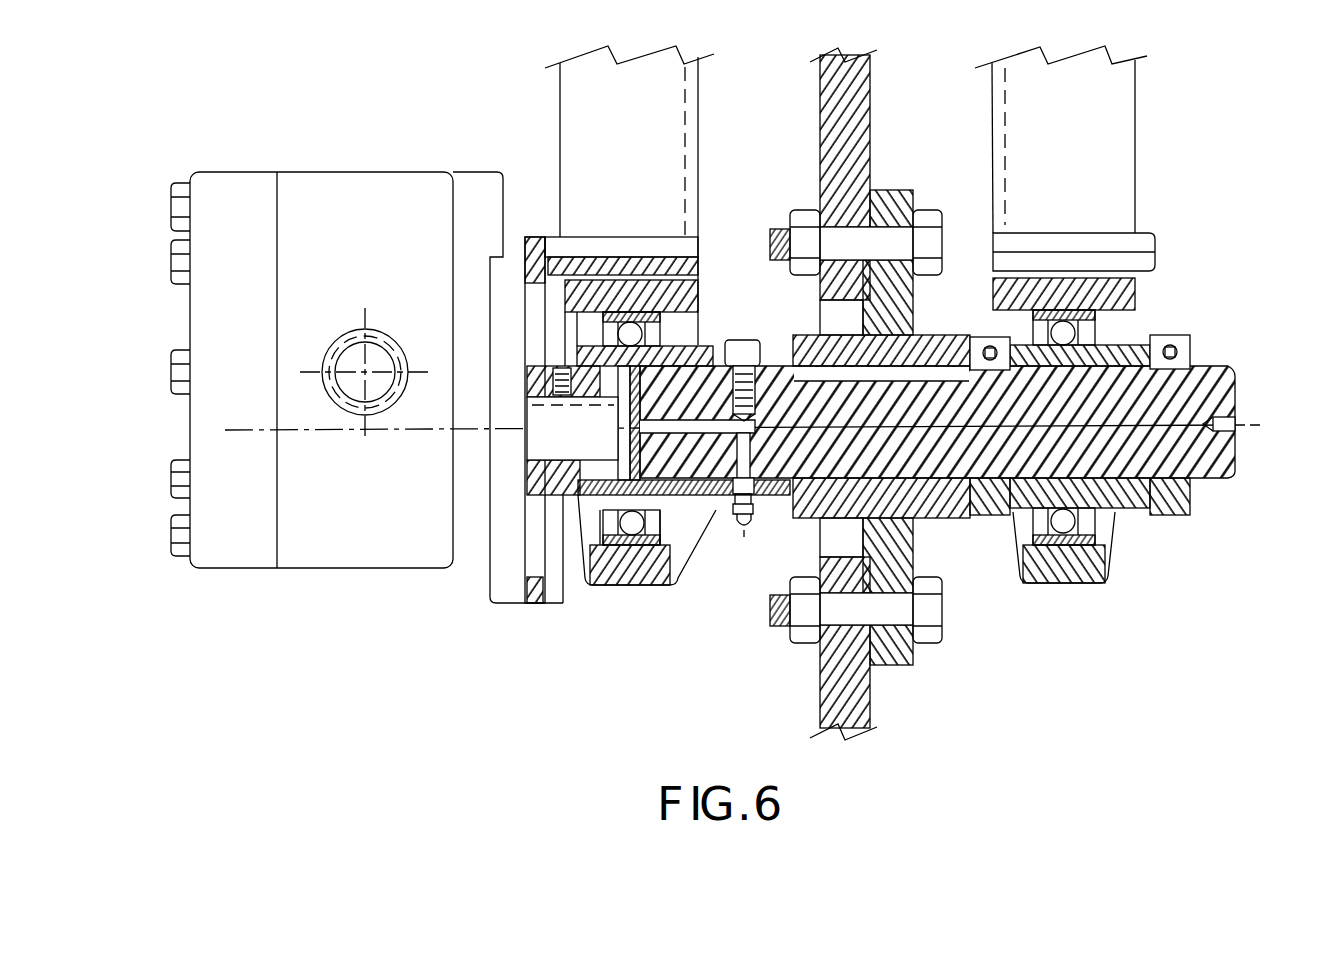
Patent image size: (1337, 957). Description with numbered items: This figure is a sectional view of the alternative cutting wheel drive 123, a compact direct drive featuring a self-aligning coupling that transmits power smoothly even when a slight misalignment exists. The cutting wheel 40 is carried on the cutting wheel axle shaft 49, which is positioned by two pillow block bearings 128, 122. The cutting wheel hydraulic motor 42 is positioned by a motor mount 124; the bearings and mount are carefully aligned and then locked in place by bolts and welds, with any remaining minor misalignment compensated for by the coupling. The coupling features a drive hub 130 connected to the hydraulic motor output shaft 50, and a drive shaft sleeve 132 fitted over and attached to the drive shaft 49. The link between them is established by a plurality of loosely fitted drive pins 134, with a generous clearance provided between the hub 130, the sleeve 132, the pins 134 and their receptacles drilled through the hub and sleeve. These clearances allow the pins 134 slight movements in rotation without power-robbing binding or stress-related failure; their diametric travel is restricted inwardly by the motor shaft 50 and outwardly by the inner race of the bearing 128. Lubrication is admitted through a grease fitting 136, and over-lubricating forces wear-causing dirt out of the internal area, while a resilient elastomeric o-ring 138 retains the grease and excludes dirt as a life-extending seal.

The cutting wheel 40 is at (875, 680).
The cutting wheel hydraulic motor 42 is at (340, 570).
The cutting wheel axle shaft 49 is at (1222, 368).
The hydraulic motor output shaft 50 is at (527, 500).
The pillow block bearing 122 is at (1100, 580).
The alternative cutting wheel drive 123 is at (722, 683).
The motor mount 124 is at (535, 605).
The pillow block bearing 128 is at (633, 585).
The drive hub 130 is at (565, 560).
The drive shaft sleeve 132 is at (723, 345).
The drive pins 134 is at (608, 378).
The grease fitting 136 is at (737, 525).
The o-ring 138 is at (578, 373).